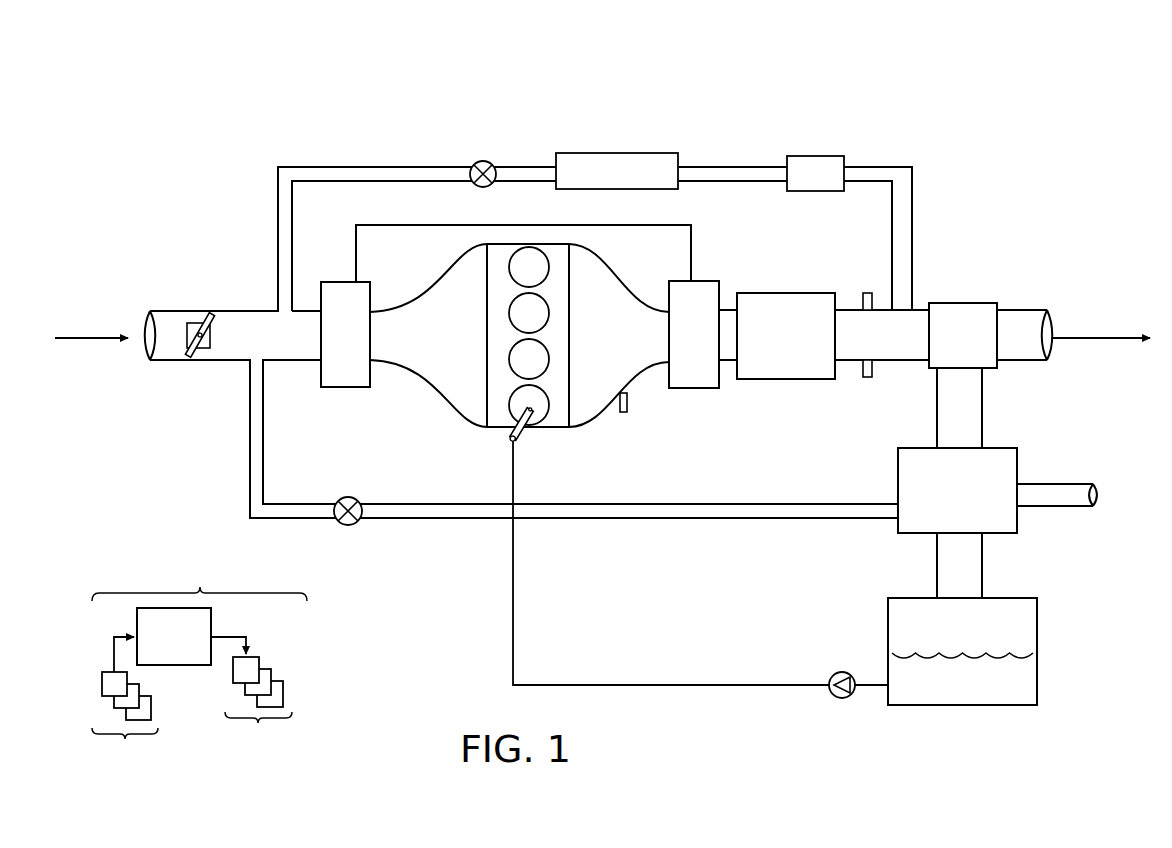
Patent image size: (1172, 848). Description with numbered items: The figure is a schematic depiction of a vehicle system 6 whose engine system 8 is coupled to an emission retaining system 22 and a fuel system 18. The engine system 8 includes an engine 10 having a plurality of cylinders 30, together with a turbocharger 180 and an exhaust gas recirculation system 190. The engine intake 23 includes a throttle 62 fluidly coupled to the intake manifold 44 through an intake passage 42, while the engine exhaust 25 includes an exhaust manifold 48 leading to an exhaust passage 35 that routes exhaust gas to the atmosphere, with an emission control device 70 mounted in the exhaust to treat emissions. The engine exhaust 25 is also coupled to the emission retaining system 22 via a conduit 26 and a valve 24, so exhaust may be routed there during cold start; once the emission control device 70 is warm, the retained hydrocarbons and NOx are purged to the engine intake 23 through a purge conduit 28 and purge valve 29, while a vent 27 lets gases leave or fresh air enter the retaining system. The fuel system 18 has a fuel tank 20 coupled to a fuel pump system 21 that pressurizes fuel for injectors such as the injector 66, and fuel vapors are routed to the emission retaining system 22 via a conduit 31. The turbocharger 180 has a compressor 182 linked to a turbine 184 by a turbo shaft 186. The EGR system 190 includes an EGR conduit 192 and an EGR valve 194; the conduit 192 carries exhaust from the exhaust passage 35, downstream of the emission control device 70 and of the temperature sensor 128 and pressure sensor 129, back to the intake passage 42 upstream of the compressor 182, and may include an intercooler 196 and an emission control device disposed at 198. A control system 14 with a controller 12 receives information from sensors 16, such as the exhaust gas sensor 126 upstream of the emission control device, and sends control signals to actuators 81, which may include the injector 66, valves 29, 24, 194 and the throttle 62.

The vehicle system 6 is at (140, 75).
The engine system 8 is at (774, 116).
The engine 10 is at (571, 320).
The controller 12 is at (174, 636).
The control system 14 is at (199, 574).
The sensors 16 is at (128, 707).
The fuel system 18 is at (927, 745).
The fuel tank 20 is at (1037, 690).
The fuel pump system 21 is at (840, 673).
The emission retaining system 22 is at (1017, 476).
The engine intake 23 is at (240, 257).
The valve 24 is at (955, 304).
The engine exhaust 25 is at (768, 232).
The conduit 26 is at (959, 408).
The vent 27 is at (1057, 495).
The purge conduit 28 is at (410, 519).
The purge valve 29 is at (353, 498).
The cylinders 30 is at (546, 266).
The conduit 31 is at (959, 565).
The exhaust passage 35 is at (1012, 310).
The intake passage 42 is at (232, 362).
The intake manifold 44 is at (428, 335).
The exhaust manifold 48 is at (619, 335).
The throttle 62 is at (210, 346).
The fuel injector 66 is at (519, 438).
The emission control device 70 is at (779, 294).
The actuators 81 is at (257, 699).
The exhaust gas sensor 126 is at (628, 400).
The temperature sensor 128 is at (862, 372).
The pressure sensor 129 is at (863, 302).
The turbocharger 180 is at (335, 412).
The compressor 182 is at (345, 334).
The turbine 184 is at (694, 334).
The turbo shaft 186 is at (573, 225).
The EGR system 190 is at (352, 162).
The EGR conduit 192 is at (430, 167).
The EGR valve 194 is at (493, 166).
The intercooler 196 is at (618, 156).
The emission control device location in EGR system 198 is at (815, 157).